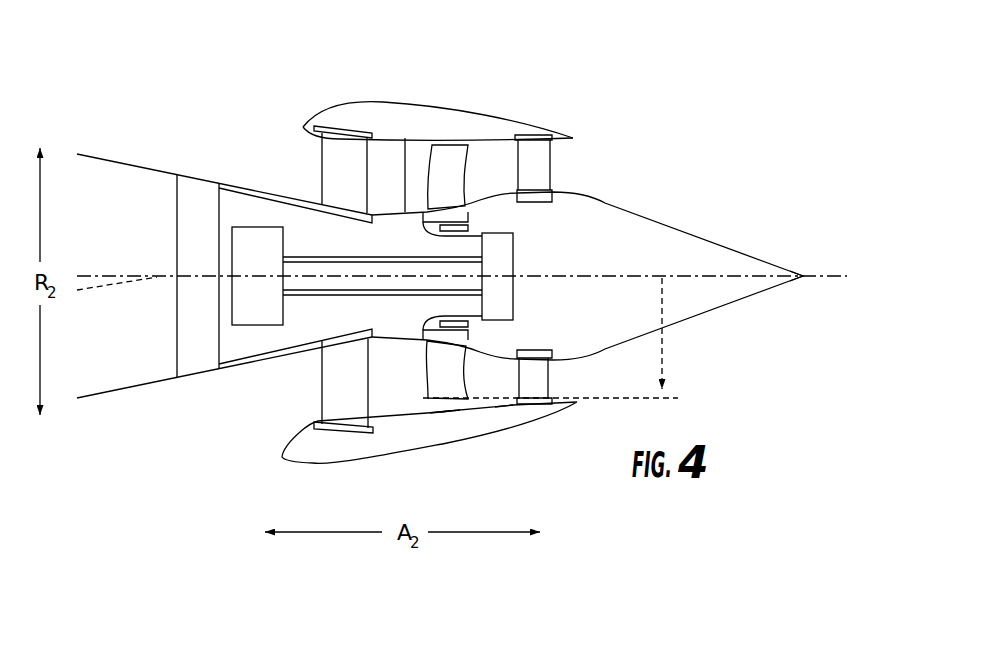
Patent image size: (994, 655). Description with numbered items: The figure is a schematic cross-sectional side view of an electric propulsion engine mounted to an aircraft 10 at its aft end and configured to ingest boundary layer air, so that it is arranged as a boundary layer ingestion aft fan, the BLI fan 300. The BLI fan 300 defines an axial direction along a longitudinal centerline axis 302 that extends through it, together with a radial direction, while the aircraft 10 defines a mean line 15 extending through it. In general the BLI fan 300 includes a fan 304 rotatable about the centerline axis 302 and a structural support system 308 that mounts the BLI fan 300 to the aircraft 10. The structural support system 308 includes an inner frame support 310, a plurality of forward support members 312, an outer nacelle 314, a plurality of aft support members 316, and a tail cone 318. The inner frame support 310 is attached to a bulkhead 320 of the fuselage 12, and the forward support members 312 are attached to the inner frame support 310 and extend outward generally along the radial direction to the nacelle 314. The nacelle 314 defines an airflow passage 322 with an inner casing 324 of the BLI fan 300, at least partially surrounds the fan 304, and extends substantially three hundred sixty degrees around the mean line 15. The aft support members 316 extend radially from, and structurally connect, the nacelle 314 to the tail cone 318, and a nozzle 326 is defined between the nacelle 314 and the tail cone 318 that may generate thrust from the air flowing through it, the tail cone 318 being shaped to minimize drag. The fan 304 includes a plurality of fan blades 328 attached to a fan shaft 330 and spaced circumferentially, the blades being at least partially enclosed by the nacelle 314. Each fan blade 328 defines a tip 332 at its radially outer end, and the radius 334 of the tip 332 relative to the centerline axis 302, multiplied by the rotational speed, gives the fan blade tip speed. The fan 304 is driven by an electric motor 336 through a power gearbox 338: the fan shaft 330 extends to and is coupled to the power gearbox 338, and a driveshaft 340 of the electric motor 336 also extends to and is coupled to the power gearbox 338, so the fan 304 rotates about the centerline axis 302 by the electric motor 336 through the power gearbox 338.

The aircraft 10 is at (93, 82).
The fuselage 12 is at (115, 390).
The mean line 15 is at (126, 285).
The BLI fan 300 is at (581, 74).
The longitudinal centerline axis 302 is at (818, 276).
The fan 304 is at (489, 153).
The structural support system 308 is at (283, 144).
The inner frame support 310 is at (236, 190).
The forward support members 312 is at (342, 147).
The outer nacelle 314 is at (388, 101).
The aft support members 316 is at (541, 162).
The tail cone 318 is at (712, 312).
The bulkhead 320 is at (183, 218).
The airflow passage 322 is at (393, 394).
The inner casing 324 is at (405, 144).
The nozzle 326 is at (505, 394).
The fan blades 328 is at (452, 395).
The fan shaft 330 is at (473, 230).
The tip 332 is at (440, 414).
The radius 334 is at (663, 365).
The electric motor 336 is at (252, 322).
The power gearbox 338 is at (505, 260).
The driveshaft 340 is at (322, 300).